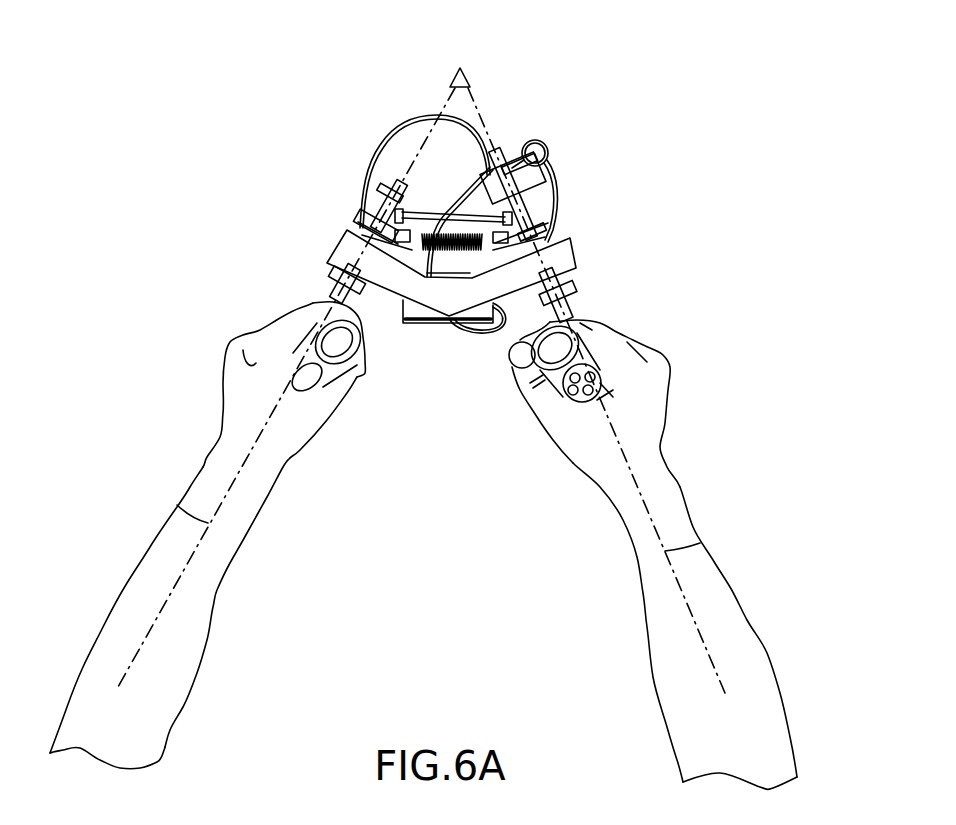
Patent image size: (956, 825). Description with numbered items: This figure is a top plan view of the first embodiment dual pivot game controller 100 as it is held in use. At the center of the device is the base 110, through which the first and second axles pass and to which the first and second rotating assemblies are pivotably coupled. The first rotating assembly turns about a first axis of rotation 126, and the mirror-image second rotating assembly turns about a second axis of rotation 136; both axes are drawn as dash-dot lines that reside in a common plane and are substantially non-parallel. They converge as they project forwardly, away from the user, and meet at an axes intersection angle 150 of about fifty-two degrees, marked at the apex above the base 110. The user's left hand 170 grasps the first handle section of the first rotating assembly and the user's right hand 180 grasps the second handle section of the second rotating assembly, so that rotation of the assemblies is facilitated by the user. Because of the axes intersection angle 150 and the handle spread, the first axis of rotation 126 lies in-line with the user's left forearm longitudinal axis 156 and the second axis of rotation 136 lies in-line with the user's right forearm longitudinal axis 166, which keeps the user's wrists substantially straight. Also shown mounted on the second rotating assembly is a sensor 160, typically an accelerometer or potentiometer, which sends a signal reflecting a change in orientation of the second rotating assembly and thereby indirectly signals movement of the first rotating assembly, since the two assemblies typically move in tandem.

The dual pivot game controller 100 is at (663, 163).
The base 110 is at (452, 316).
The first axis of rotation 126 is at (372, 153).
The second axis of rotation 136 is at (565, 184).
The axes intersection angle 150 is at (457, 90).
The left forearm longitudinal axis 156 is at (170, 506).
The sensor 160 is at (516, 153).
The right forearm longitudinal axis 166 is at (712, 543).
The left hand 170 is at (248, 330).
The right hand 180 is at (677, 372).